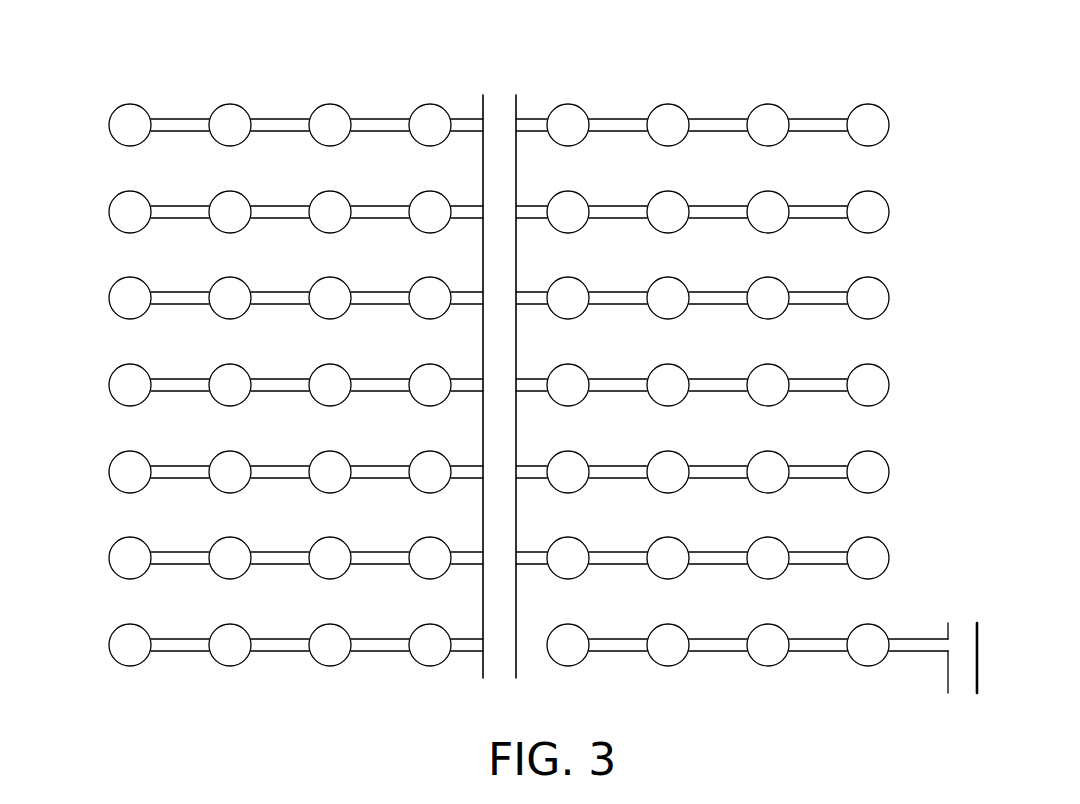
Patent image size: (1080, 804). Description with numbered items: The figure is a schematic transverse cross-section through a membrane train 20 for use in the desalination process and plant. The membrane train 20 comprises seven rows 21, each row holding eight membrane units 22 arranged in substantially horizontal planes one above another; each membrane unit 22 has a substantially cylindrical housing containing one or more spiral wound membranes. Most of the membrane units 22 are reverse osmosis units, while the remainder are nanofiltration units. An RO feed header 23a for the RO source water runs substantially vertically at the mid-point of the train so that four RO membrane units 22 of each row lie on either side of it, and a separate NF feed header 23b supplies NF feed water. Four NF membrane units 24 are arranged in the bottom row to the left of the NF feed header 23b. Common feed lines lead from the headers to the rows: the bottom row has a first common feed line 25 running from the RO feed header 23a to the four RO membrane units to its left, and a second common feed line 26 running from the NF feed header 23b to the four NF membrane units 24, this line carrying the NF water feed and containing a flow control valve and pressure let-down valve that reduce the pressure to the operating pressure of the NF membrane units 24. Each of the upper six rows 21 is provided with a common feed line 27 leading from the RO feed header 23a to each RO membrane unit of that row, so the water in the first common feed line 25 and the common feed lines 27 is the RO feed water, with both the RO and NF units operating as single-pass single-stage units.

The membrane train 20 is at (950, 396).
The row 21 is at (108, 128).
The membrane unit 22 is at (131, 103).
The RO feed header 23a is at (493, 96).
The NF feed header 23b is at (981, 662).
The NF membrane unit 24 is at (568, 667).
The first common feed line 25 is at (470, 656).
The second common feed line 26 is at (914, 638).
The common feed line 27 is at (617, 118).